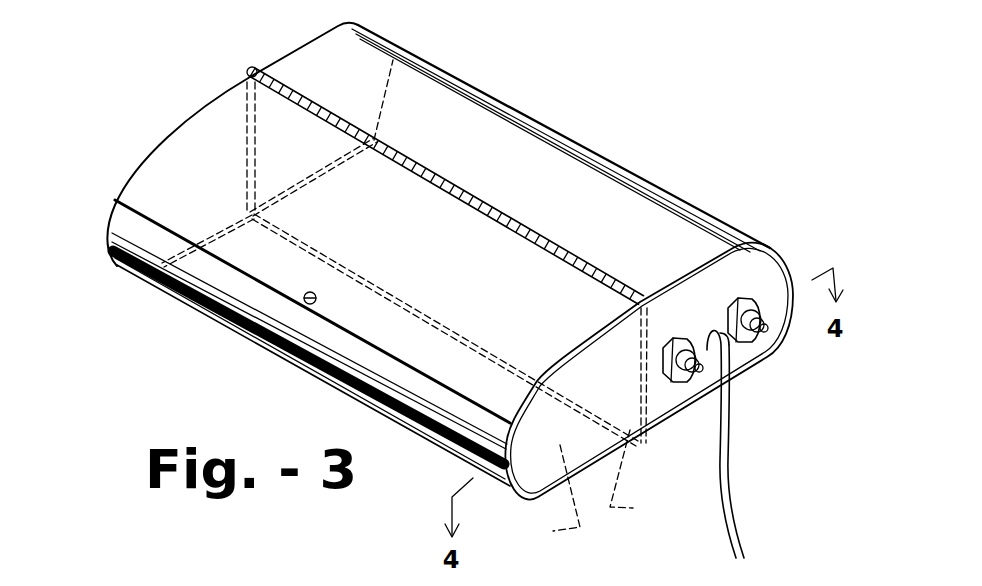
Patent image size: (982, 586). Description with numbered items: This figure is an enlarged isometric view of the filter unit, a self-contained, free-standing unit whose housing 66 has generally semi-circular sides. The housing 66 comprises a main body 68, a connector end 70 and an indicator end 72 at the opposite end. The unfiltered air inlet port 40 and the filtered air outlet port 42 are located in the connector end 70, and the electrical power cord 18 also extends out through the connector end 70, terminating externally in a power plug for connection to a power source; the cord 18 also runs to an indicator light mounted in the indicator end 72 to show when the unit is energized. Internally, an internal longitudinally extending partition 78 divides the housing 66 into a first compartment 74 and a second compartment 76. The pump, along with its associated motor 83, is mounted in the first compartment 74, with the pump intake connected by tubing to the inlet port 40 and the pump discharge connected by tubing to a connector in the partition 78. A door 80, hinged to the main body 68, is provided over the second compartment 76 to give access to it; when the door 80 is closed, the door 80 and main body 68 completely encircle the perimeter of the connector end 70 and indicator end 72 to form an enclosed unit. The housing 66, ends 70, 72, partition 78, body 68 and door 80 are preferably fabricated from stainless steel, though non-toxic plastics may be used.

The electrical power cord 18 is at (723, 468).
The unfiltered air inlet port 40 is at (764, 312).
The filtered air outlet port 42 is at (695, 378).
The housing 66 is at (571, 193).
The main body 68 is at (450, 125).
The connector end 70 is at (737, 374).
The indicator end 72 is at (180, 190).
The first compartment 74 is at (745, 366).
The second compartment 76 is at (545, 495).
The internal longitudinally extending partition 78 is at (642, 417).
The door 80 is at (197, 128).
The pump motor 83 is at (249, 74).